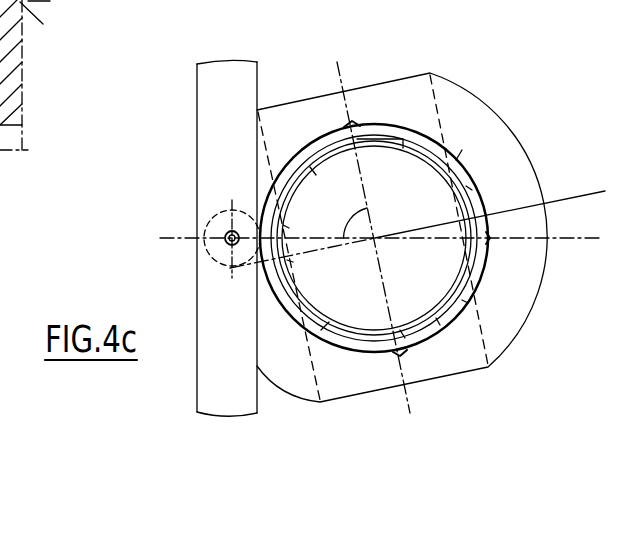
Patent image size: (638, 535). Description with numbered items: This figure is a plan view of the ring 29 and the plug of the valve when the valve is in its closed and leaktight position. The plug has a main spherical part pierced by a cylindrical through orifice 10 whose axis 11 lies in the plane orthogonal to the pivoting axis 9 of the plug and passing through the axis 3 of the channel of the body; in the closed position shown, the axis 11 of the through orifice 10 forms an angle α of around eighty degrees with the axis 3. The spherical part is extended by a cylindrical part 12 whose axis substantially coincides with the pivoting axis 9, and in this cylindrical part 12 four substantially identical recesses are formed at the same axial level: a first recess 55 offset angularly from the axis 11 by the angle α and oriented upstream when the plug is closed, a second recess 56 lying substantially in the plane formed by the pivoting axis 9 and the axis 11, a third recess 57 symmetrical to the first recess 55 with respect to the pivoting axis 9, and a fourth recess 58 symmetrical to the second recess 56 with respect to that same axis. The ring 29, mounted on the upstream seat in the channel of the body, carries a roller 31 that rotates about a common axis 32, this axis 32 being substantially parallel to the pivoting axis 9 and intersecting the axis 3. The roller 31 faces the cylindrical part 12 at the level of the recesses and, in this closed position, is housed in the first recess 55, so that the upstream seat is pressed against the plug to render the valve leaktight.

The axis of the channel of the body 3 is at (568, 238).
The pivoting axis 9 is at (376, 240).
The cylindrical through orifice 10 is at (290, 130).
The axis of the through orifice 11 is at (346, 78).
The cylindrical part 12 is at (471, 155).
The ring 29 is at (227, 385).
The roller 31 is at (218, 230).
The common axis 32 is at (230, 247).
The first recess 55 is at (253, 233).
The second recess 56 is at (352, 127).
The third recess 57 is at (490, 238).
The fourth recess 58 is at (400, 356).